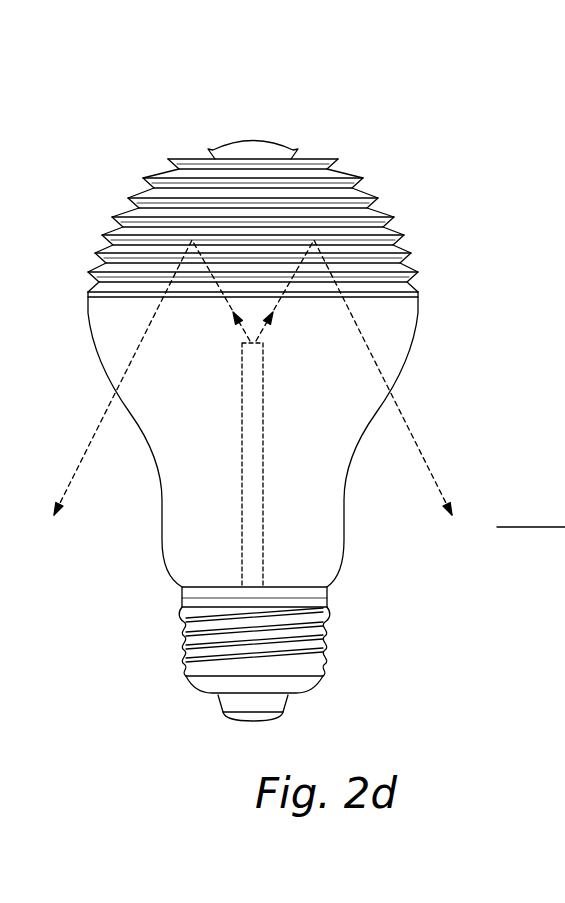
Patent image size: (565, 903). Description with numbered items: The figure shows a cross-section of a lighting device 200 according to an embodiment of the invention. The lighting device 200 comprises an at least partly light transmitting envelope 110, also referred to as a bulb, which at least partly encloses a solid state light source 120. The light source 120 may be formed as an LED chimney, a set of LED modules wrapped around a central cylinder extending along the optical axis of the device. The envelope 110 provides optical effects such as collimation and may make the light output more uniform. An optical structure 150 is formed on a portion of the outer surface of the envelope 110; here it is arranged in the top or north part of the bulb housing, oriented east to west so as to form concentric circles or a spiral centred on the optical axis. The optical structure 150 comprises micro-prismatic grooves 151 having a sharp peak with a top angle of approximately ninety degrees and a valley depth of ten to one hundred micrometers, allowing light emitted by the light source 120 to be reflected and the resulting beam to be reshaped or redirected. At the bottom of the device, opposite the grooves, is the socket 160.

The lighting device 200 is at (394, 78).
The optical structure 150 is at (146, 151).
The micro-prismatic grooves 151 is at (384, 211).
The envelope 110 is at (415, 347).
The solid state light source 120 is at (243, 343).
The socket 160 is at (327, 633).